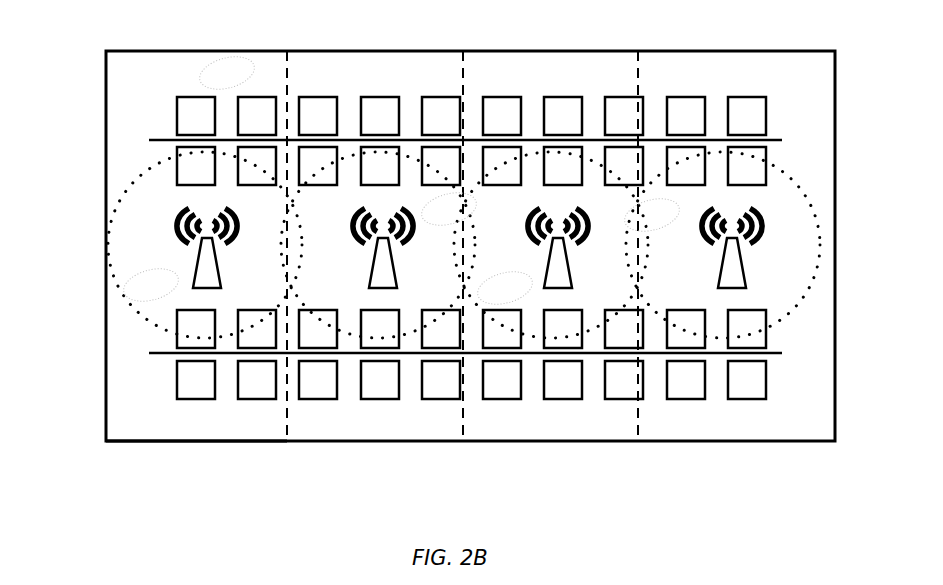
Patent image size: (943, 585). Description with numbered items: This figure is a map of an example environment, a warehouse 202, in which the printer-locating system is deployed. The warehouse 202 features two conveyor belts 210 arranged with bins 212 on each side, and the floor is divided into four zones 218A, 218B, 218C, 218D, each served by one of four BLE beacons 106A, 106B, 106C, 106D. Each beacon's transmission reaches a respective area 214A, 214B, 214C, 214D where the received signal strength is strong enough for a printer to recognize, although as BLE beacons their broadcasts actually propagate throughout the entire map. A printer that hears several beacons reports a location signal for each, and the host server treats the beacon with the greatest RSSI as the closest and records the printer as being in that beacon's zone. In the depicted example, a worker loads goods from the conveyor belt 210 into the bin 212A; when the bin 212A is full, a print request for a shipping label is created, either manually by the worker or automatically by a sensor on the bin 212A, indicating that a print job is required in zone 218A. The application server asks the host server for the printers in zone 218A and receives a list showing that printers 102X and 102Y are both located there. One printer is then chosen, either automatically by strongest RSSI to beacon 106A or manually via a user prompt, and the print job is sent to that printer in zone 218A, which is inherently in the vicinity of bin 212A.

The printer 102X is at (214, 62).
The printer 102Y is at (133, 293).
The warehouse 202 is at (410, 95).
The conveyor belt 210 is at (182, 140).
The bins 212 is at (677, 98).
The bin 212A is at (198, 333).
The area 214A is at (123, 190).
The area 214B is at (357, 337).
The area 214C is at (540, 337).
The area 214D is at (813, 200).
The beacon 106A is at (197, 275).
The beacon 106B is at (372, 275).
The beacon 106C is at (547, 273).
The beacon 106D is at (720, 275).
The zone 218A is at (198, 433).
The zone 218B is at (382, 443).
The zone 218C is at (595, 442).
The zone 218D is at (773, 442).